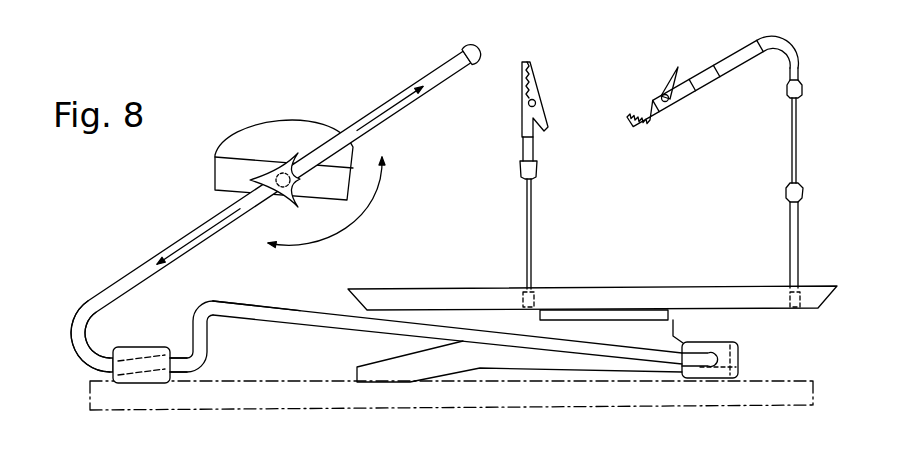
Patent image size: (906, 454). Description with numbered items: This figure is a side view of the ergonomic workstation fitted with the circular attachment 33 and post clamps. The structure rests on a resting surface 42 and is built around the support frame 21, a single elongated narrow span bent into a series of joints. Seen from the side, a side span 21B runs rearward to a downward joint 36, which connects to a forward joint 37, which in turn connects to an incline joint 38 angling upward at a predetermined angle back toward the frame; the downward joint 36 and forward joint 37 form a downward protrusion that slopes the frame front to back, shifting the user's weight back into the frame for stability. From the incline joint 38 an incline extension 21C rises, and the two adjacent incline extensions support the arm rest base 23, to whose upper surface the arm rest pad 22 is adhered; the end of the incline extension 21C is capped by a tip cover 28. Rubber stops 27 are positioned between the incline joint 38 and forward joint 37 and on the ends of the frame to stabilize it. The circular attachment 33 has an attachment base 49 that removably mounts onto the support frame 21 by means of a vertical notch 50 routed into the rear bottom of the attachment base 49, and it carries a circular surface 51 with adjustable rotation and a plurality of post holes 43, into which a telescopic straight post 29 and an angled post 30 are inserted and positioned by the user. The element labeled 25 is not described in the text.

The support frame 21 is at (300, 298).
The side span 21B is at (373, 323).
The incline extension 21C is at (443, 82).
The arm rest pad 22 is at (258, 125).
The arm rest base 23 is at (230, 170).
The wing nut 25 is at (230, 188).
The rubber stop 27 is at (113, 373).
The tip cover 28 is at (473, 47).
The straight post 29 is at (535, 233).
The angled post 30 is at (795, 262).
The circular attachment 33 is at (458, 281).
The downward joint 36 is at (215, 317).
The forward joint 37 is at (193, 375).
The incline joint 38 is at (71, 328).
The resting surface 42 is at (168, 405).
The post hole 43 is at (795, 296).
The attachment base 49 is at (677, 337).
The vertical notch 50 is at (712, 368).
The circular surface 51 is at (397, 287).